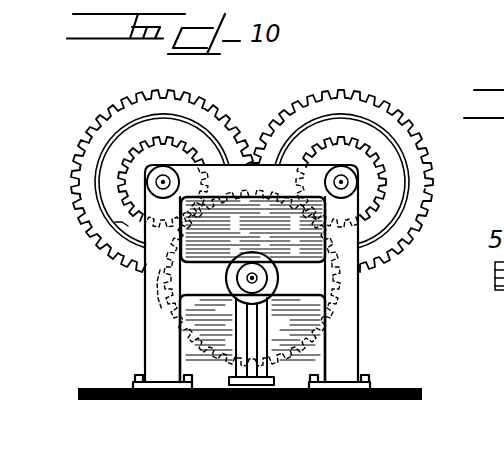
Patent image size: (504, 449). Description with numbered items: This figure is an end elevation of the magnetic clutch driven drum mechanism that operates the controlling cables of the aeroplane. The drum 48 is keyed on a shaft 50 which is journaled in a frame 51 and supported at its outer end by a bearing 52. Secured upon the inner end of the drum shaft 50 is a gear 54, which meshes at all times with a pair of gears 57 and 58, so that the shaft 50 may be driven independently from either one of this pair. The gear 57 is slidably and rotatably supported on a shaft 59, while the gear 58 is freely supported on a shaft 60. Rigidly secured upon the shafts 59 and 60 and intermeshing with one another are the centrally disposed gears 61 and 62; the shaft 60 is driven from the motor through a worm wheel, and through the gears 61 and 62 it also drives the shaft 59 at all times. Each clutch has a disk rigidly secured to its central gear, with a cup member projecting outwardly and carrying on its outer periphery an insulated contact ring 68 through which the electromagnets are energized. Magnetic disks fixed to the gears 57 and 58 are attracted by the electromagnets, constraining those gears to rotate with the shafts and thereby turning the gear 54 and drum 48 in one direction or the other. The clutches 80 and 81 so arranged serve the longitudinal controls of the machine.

The drum 48 is at (270, 280).
The shaft 50 is at (183, 313).
The frame 51 is at (157, 292).
The bearing 52 is at (262, 348).
The gear 54 is at (223, 342).
The gear 57 is at (185, 155).
The gear 58 is at (354, 153).
The shaft 59 is at (158, 184).
The shaft 60 is at (343, 182).
The central gear 61 is at (123, 130).
The central gear 62 is at (415, 213).
The contact ring 68 is at (148, 118).
The clutch 80 is at (389, 192).
The clutch 81 is at (122, 222).